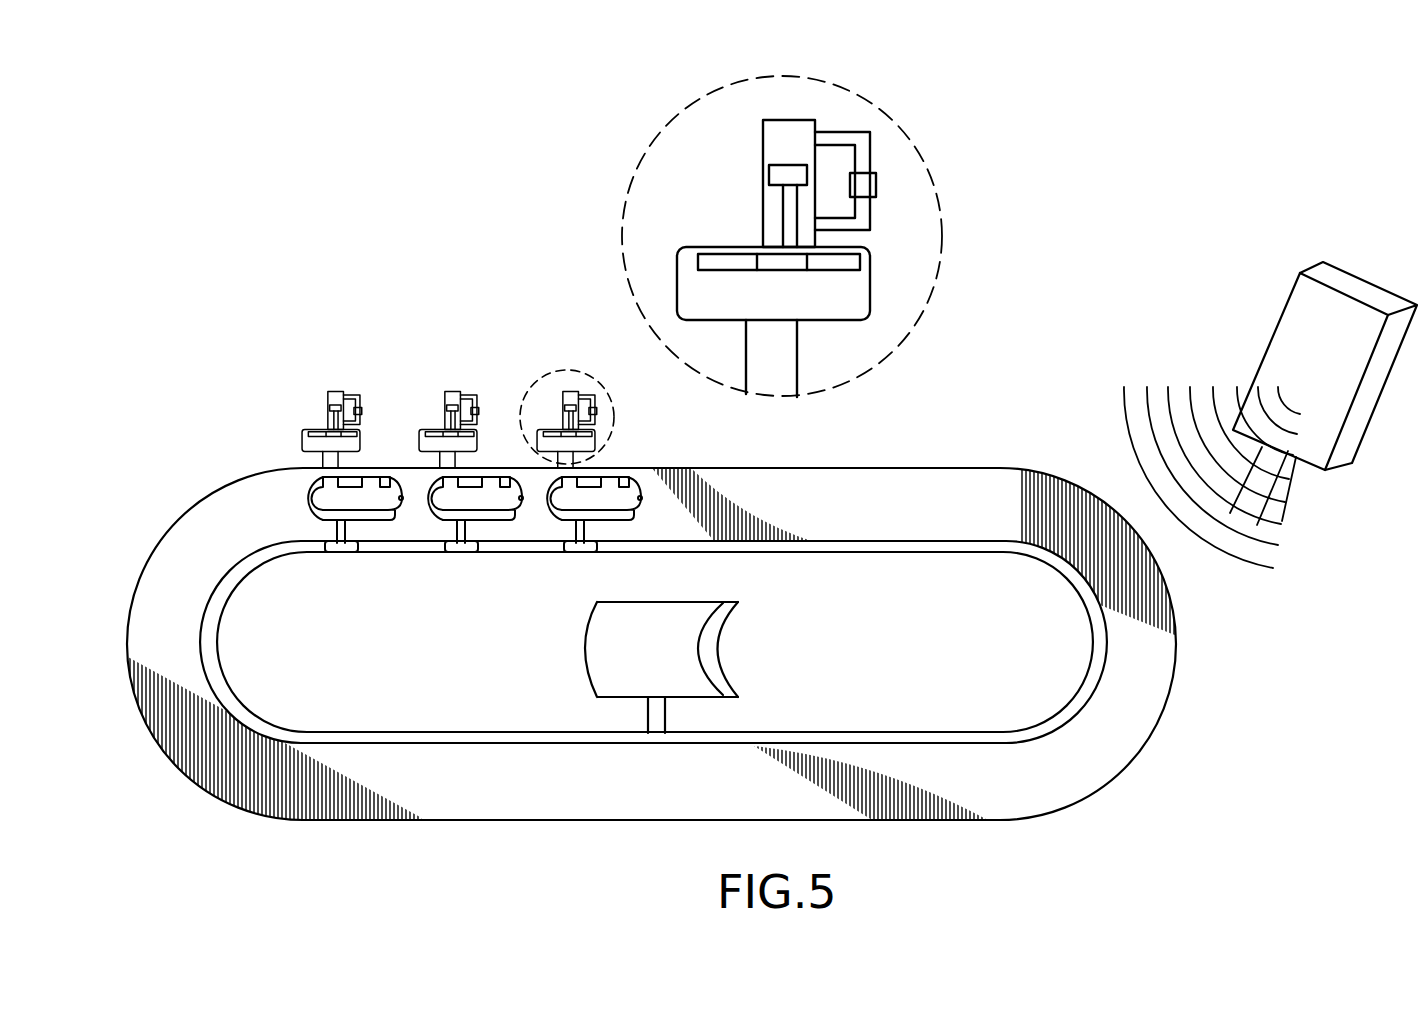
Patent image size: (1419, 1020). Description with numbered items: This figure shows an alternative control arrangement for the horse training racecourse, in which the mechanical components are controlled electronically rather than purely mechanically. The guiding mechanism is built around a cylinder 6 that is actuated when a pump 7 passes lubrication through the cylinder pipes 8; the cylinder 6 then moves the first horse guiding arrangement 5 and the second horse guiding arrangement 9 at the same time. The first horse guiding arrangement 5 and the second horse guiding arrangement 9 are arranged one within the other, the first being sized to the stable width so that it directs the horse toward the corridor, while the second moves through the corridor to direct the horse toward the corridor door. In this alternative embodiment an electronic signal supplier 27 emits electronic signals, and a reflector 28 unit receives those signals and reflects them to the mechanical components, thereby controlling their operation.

The first horse guiding arrangement 5 is at (843, 260).
The cylinder 6 is at (788, 138).
The pump 7 is at (858, 184).
The cylinder pipes 8 is at (860, 138).
The second horse guiding arrangement 9 is at (780, 260).
The electronic signal supplier 27 is at (1310, 327).
The reflector 28 is at (667, 652).